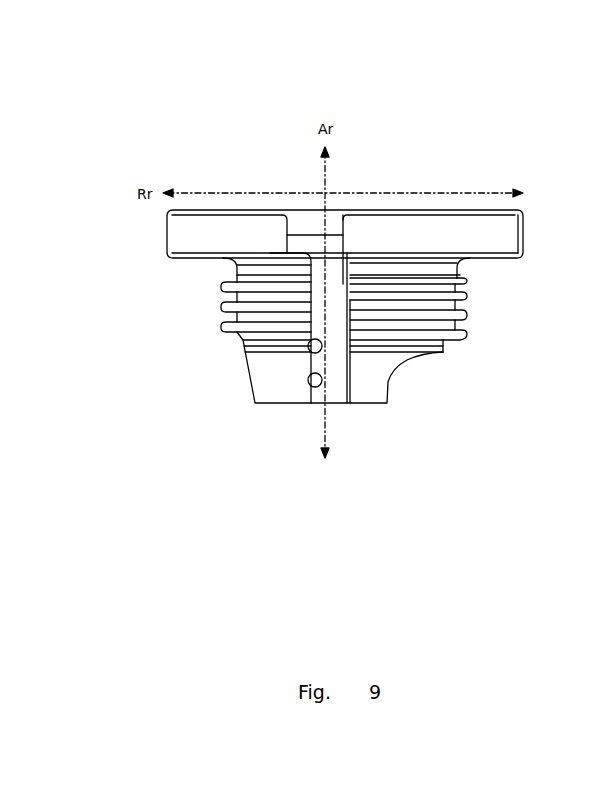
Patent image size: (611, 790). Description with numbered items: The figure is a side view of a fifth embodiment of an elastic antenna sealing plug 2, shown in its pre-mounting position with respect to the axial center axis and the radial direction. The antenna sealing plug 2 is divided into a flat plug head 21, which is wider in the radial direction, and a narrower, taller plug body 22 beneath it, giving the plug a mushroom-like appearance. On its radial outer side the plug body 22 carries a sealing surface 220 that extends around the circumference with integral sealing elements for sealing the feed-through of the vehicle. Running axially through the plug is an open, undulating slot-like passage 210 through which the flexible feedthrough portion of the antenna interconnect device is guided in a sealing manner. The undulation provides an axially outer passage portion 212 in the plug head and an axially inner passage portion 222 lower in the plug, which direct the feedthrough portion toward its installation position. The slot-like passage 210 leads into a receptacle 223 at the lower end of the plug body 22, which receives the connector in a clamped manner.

The antenna sealing plug 2 is at (211, 95).
The plug head 21 is at (160, 211).
The plug body 22 is at (160, 255).
The slot-like passage 210 is at (327, 290).
The passage portion 212 is at (307, 222).
The sealing surface 220 is at (448, 297).
The passage portion 222 is at (330, 268).
The receptacle 223 is at (333, 370).